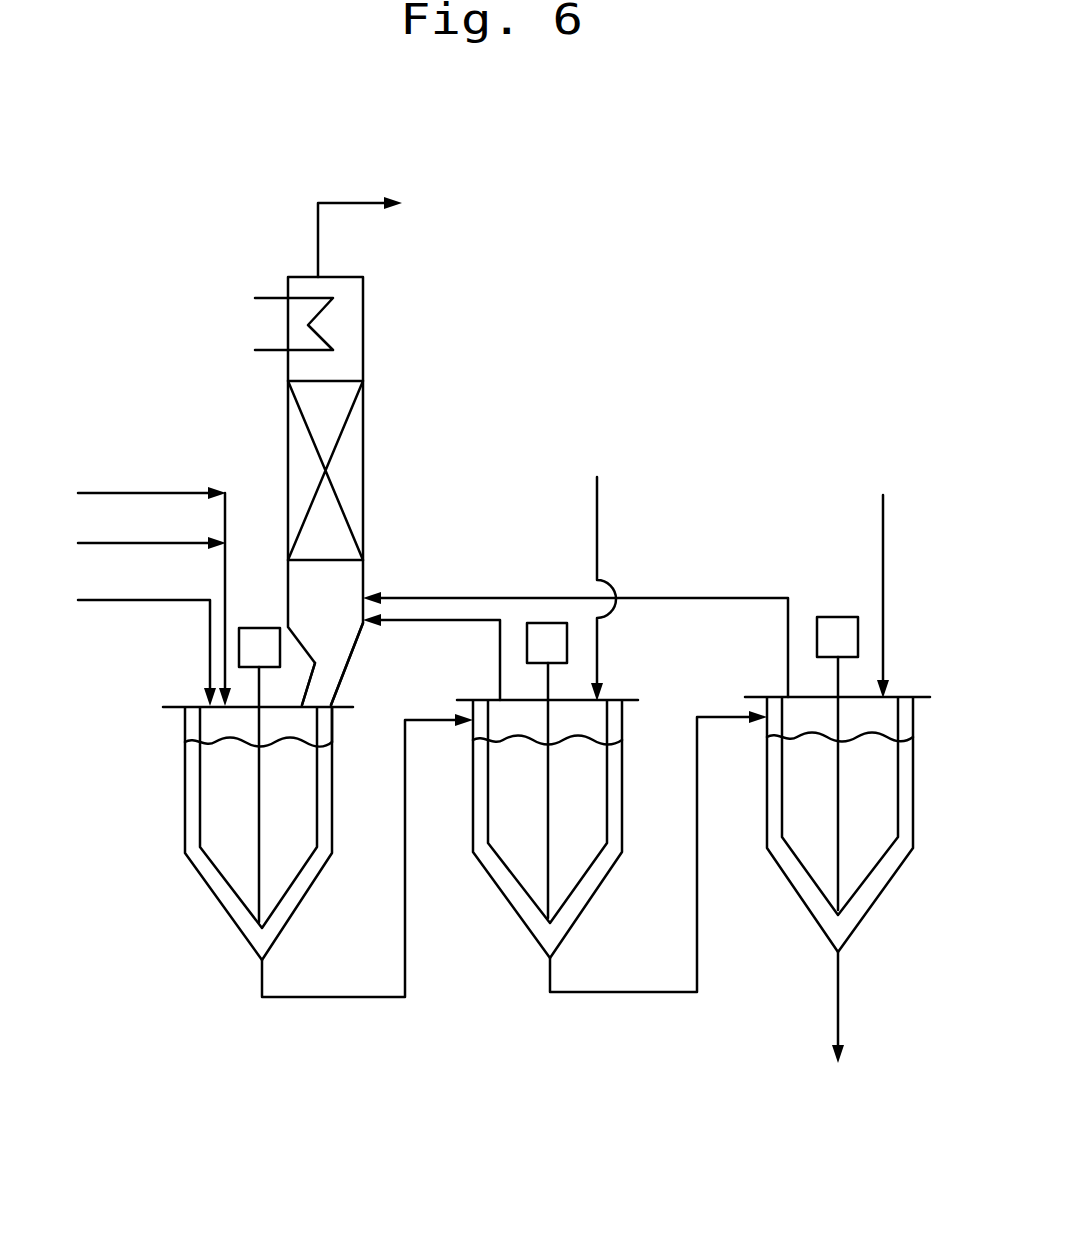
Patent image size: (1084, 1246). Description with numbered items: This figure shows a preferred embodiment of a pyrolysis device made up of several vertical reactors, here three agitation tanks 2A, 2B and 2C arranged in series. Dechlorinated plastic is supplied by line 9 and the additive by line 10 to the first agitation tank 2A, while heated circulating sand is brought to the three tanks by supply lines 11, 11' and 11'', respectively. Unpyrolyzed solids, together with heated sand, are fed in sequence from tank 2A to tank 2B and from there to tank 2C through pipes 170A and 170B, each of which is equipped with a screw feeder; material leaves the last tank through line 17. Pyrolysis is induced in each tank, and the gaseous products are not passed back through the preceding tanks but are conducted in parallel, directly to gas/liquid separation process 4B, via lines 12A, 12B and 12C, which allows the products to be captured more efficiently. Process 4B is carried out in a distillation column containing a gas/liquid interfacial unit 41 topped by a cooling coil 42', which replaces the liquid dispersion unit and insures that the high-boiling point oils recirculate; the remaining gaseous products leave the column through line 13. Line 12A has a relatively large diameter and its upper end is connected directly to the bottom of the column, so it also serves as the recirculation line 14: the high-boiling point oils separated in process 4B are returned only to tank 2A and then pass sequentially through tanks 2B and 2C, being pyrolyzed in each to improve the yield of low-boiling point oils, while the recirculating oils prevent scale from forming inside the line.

The gas/liquid separation process 4B is at (380, 578).
The gas/liquid interfacial unit 41 is at (352, 460).
The cooling coil 42' is at (345, 324).
The line 13 is at (354, 200).
The line 10 is at (165, 490).
The supply line 11 is at (152, 563).
The line 9 is at (137, 603).
The line 12A is at (345, 667).
The line 12B is at (422, 627).
The line 12C is at (667, 598).
The supply line 11' is at (640, 589).
The supply line 11'' is at (927, 596).
The agitation tank 2A is at (183, 825).
The agitation tank 2B is at (493, 880).
The agitation tank 2C is at (788, 883).
The line 14 is at (336, 700).
The pipe 170A is at (333, 997).
The pipe 170B is at (642, 992).
The line 17 is at (842, 1010).